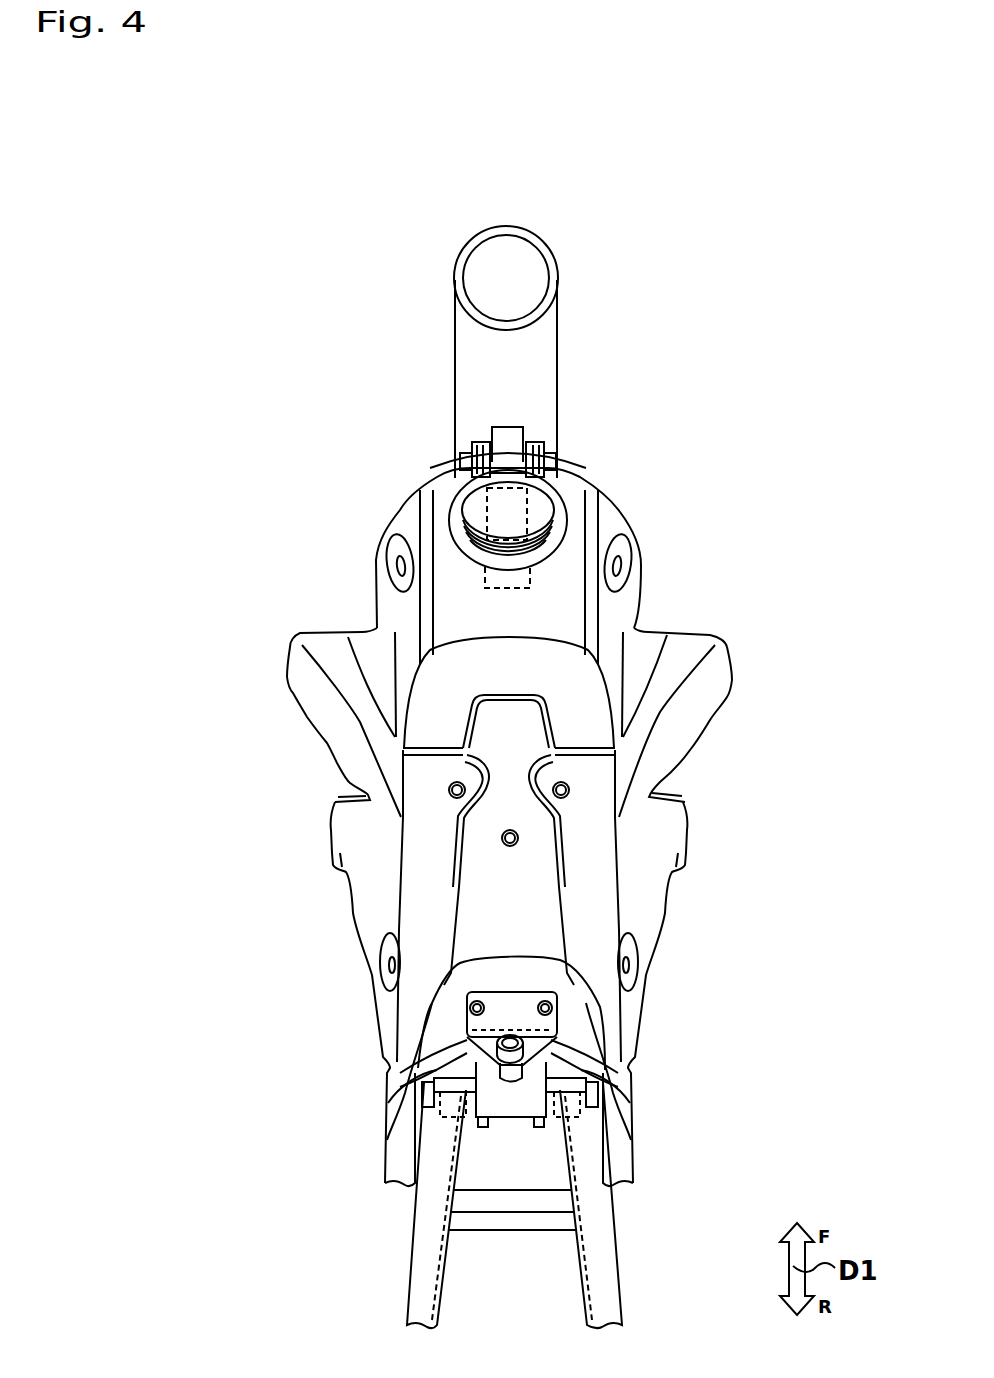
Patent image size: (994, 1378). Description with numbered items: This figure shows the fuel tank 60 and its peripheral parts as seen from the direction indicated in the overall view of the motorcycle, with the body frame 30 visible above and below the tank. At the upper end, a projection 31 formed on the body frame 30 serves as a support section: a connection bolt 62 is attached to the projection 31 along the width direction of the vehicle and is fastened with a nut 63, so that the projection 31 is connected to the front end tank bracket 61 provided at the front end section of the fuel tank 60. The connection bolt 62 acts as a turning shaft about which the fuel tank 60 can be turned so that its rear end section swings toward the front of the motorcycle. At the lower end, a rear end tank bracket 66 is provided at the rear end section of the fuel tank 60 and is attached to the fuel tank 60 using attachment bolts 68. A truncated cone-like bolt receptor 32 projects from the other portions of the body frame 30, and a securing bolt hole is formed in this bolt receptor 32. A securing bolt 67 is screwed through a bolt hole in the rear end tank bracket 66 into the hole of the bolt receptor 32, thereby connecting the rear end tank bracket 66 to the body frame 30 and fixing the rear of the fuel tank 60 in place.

The body frame 30 is at (559, 323).
The projection 31 is at (512, 437).
The bolt receptor 32 is at (514, 1076).
The fuel tank 60 is at (608, 605).
The front end tank bracket 61 is at (557, 518).
The connection bolt 62 is at (460, 455).
The nut 63 is at (557, 455).
The rear end tank bracket 66 is at (560, 1026).
The securing bolt 67 is at (522, 1040).
The attachment bolts 68 is at (478, 1000).